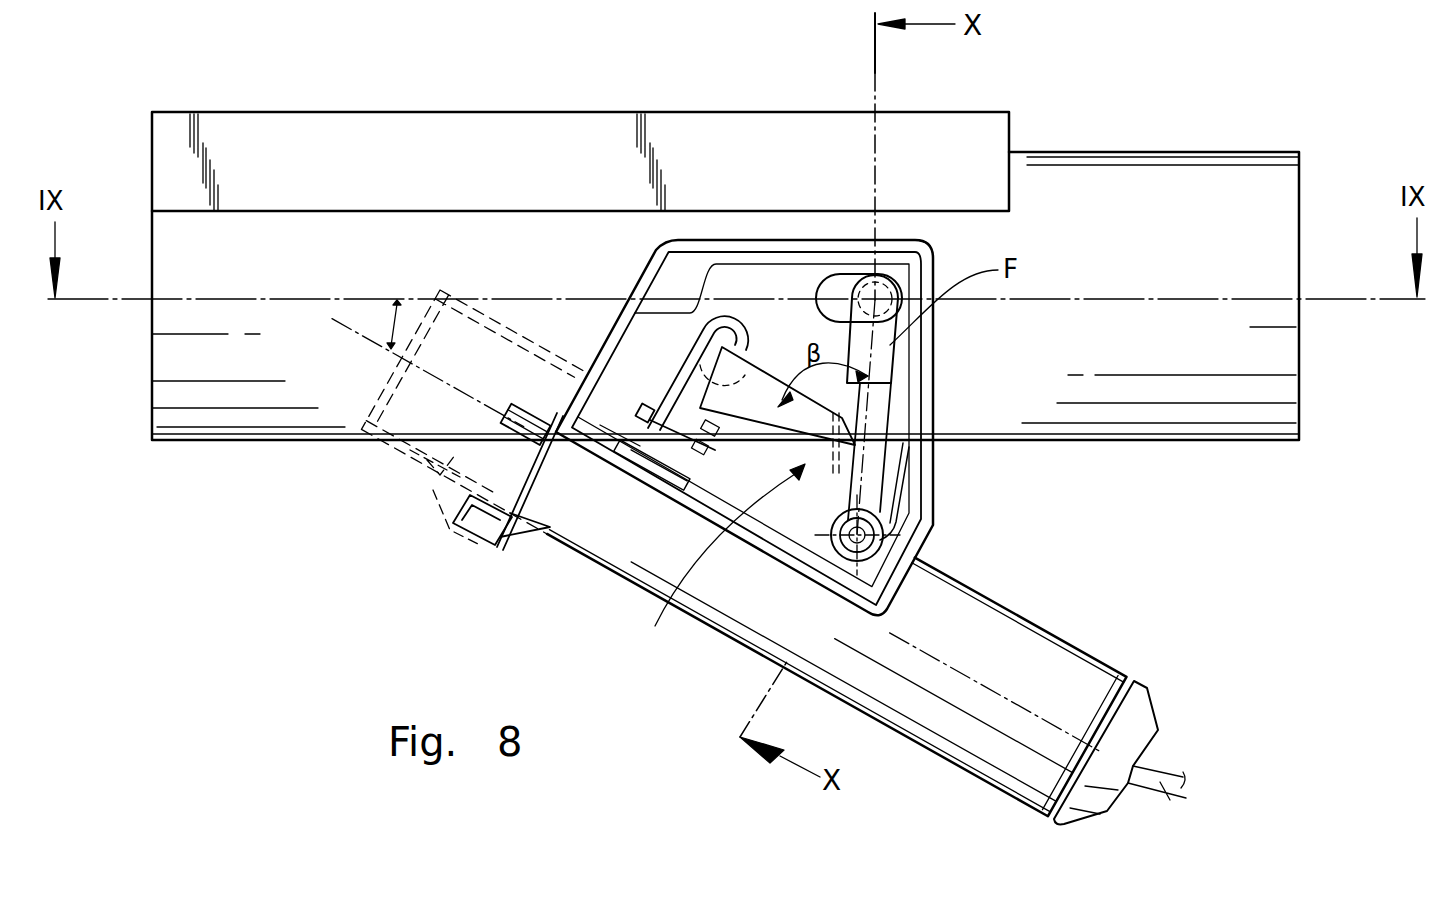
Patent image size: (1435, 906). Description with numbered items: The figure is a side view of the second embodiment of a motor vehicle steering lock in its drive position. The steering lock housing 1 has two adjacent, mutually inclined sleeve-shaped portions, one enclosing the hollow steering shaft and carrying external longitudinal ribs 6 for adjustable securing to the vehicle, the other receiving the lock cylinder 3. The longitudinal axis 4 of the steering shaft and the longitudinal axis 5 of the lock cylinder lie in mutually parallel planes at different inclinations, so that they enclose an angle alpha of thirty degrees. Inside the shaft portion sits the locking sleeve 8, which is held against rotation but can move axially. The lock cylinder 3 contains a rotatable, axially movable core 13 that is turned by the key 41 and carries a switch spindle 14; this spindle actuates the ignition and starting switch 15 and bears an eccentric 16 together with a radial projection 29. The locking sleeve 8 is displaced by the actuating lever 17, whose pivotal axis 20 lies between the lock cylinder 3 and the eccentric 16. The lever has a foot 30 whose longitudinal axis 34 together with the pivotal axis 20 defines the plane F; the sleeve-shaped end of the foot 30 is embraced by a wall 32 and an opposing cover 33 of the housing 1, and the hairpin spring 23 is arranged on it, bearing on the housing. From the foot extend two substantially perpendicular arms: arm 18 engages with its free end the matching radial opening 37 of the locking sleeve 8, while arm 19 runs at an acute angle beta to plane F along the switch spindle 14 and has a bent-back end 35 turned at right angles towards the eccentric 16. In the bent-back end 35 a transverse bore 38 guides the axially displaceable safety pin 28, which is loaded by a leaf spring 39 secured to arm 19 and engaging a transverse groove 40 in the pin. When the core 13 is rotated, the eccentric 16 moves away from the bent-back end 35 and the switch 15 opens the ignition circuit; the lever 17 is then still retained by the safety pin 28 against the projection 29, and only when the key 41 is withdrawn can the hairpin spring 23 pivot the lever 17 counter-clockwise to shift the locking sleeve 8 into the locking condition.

The steering lock housing 1 is at (1113, 432).
The lock cylinder 3 is at (1161, 742).
The longitudinal axis of the steering shaft 4 is at (1212, 298).
The longitudinal axis of the lock cylinder 5 is at (355, 330).
The external longitudinal ribs 6 is at (337, 134).
The locking sleeve 8 is at (828, 288).
The core 13 is at (1094, 800).
The switch spindle 14 is at (540, 403).
The ignition and starting switch 15 is at (445, 480).
The eccentric 16 is at (630, 452).
The actuating lever 17 is at (718, 560).
The arm 18 is at (890, 345).
The arm 19 is at (757, 390).
The pivotal axis 20 is at (905, 600).
The hairpin spring 23 is at (912, 503).
The safety pin 28 is at (702, 454).
The radial projection 29 is at (683, 460).
The foot 30 is at (878, 445).
The wall 32 is at (797, 560).
The cover 33 is at (657, 276).
The longitudinal axis of the foot 34 is at (880, 420).
The bent-back end 35 is at (672, 399).
The radial opening 37 is at (908, 263).
The transverse bore 38 is at (705, 423).
The leaf spring 39 is at (707, 322).
The transverse groove 40 is at (615, 430).
The key 41 is at (1156, 806).